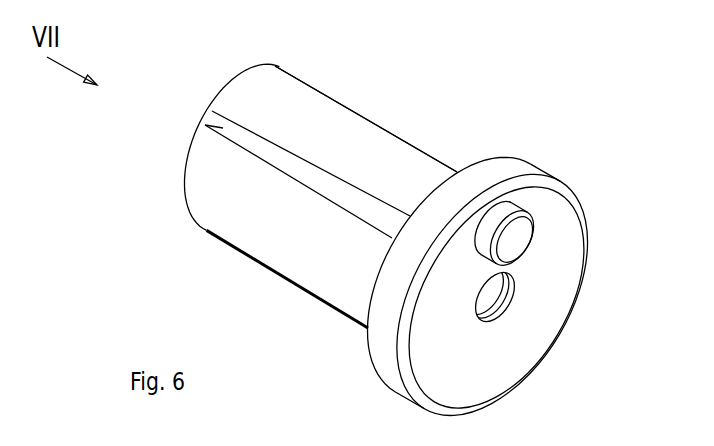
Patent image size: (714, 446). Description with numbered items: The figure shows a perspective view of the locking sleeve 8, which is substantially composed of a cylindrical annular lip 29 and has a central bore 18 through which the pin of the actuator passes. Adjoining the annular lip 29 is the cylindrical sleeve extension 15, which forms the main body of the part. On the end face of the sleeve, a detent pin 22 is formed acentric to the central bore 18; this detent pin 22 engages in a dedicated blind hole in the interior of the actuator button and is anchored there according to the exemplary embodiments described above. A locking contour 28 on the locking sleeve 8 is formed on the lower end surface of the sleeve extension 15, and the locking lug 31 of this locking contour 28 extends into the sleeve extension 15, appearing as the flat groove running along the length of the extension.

The locking sleeve 8 is at (368, 142).
The sleeve extension 15 is at (288, 107).
The central bore 18 is at (517, 307).
The detent pin 22 is at (513, 242).
The locking contour 28 is at (193, 144).
The annular lip 29 is at (555, 280).
The locking lug 31 is at (212, 110).